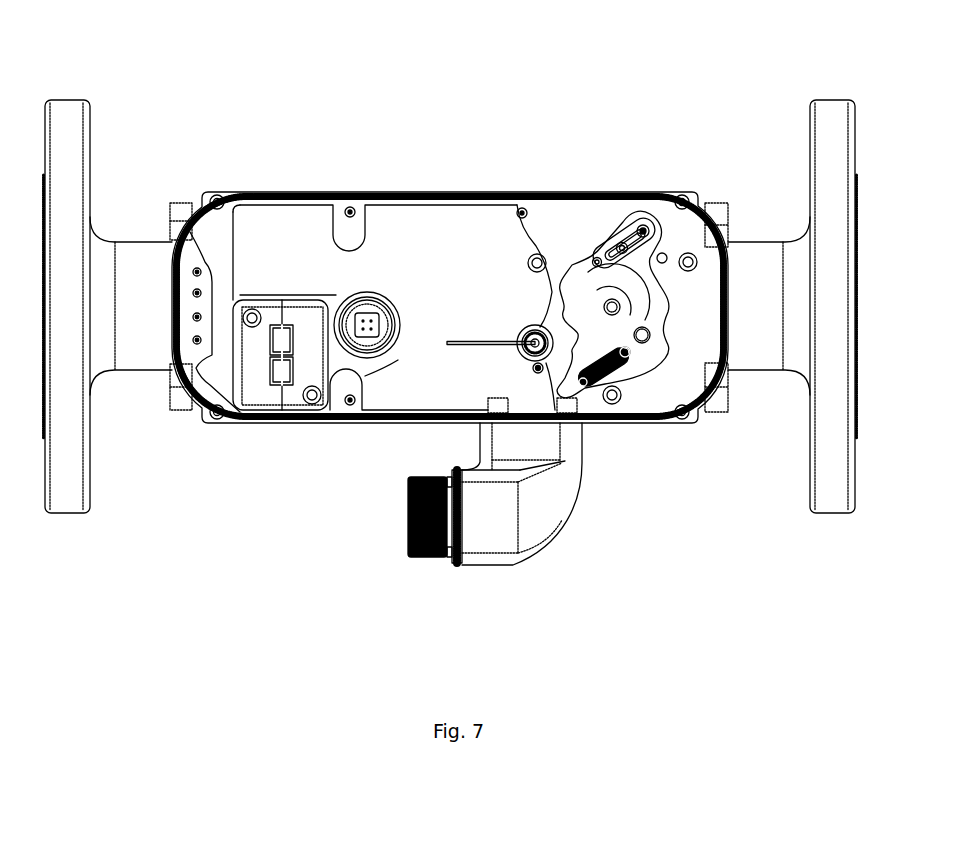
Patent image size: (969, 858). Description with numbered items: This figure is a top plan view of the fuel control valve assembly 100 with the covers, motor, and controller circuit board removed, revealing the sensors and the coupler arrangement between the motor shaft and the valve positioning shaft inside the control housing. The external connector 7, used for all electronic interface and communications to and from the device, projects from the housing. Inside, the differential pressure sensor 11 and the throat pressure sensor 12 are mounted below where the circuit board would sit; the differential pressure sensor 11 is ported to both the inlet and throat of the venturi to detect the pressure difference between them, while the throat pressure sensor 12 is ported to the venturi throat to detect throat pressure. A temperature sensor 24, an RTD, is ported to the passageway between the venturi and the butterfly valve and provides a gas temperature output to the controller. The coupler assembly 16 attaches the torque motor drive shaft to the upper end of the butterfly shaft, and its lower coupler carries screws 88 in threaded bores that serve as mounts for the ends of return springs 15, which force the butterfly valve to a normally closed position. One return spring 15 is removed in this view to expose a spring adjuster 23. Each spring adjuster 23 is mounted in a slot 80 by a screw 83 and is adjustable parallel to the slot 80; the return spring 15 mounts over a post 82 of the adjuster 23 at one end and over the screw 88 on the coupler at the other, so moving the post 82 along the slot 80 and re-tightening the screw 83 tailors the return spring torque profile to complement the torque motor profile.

The fuel control valve assembly 100 is at (230, 90).
The external connector 7 is at (423, 557).
The differential pressure sensor 11 is at (255, 393).
The throat pressure sensor 12 is at (367, 307).
The return spring 15 is at (593, 358).
The coupler assembly 16 is at (652, 323).
The spring adjuster 23 is at (633, 218).
The temperature sensor 24 is at (533, 348).
The slot 80 is at (643, 226).
The post 82 is at (647, 233).
The screw 83 is at (618, 237).
The screw 88 is at (595, 257).